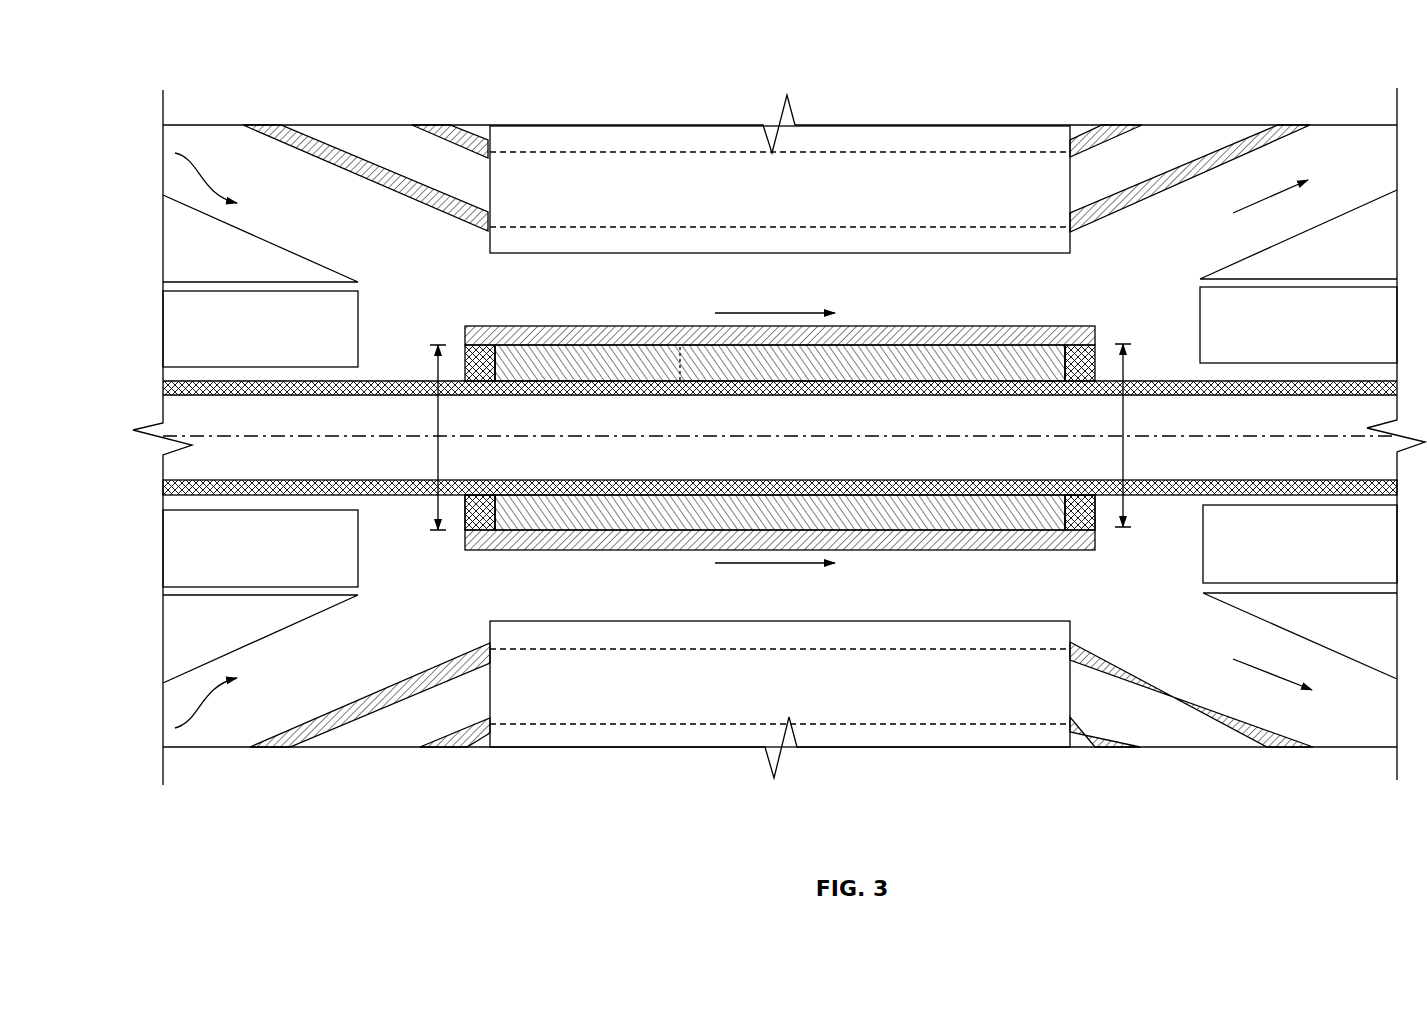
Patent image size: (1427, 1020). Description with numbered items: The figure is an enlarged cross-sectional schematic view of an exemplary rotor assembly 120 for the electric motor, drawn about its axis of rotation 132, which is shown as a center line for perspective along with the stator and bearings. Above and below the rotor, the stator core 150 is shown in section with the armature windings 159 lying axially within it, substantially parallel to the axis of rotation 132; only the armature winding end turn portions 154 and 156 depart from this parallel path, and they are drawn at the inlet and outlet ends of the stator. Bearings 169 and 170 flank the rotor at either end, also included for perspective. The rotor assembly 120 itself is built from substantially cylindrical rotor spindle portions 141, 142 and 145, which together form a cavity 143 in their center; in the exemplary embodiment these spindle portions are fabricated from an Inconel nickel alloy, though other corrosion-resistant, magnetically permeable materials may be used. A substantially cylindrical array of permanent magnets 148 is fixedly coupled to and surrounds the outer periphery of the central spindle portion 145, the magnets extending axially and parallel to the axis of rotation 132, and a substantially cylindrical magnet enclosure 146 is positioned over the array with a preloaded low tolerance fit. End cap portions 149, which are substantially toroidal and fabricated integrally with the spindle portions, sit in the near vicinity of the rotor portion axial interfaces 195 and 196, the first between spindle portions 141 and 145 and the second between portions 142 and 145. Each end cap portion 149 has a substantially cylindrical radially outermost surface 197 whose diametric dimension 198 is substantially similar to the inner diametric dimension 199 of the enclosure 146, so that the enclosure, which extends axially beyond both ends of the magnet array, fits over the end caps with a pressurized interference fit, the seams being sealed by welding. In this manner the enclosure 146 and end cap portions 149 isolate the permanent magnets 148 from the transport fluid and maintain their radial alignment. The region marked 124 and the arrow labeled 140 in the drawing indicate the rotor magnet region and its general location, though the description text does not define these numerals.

The rotor assembly 120 is at (216, 68).
The heater 124 is at (544, 300).
The axis of rotation 132 is at (407, 437).
The heater assembly 140 is at (458, 292).
The rotor spindle portion 141 is at (178, 381).
The rotor spindle portion 142 is at (1372, 381).
The cavity 143 is at (229, 471).
The rotor spindle portion 145 is at (662, 343).
The magnet enclosure 146 is at (962, 326).
The permanent magnets 148 is at (1020, 355).
The end cap portions 149 is at (500, 368).
The stator core 150 is at (763, 197).
The stator end winding portion 154 is at (353, 173).
The stator end winding portion 156 is at (1123, 211).
The armature windings 159 is at (585, 158).
The bearing 169 is at (282, 343).
The bearing 170 is at (1246, 337).
The rotor portion axial interface 195 is at (500, 500).
The rotor portion axial interface 196 is at (1060, 500).
The radially outermost surface 197 is at (476, 343).
The diametric dimension 198 is at (436, 346).
The inner diametric dimension 199 is at (1127, 362).